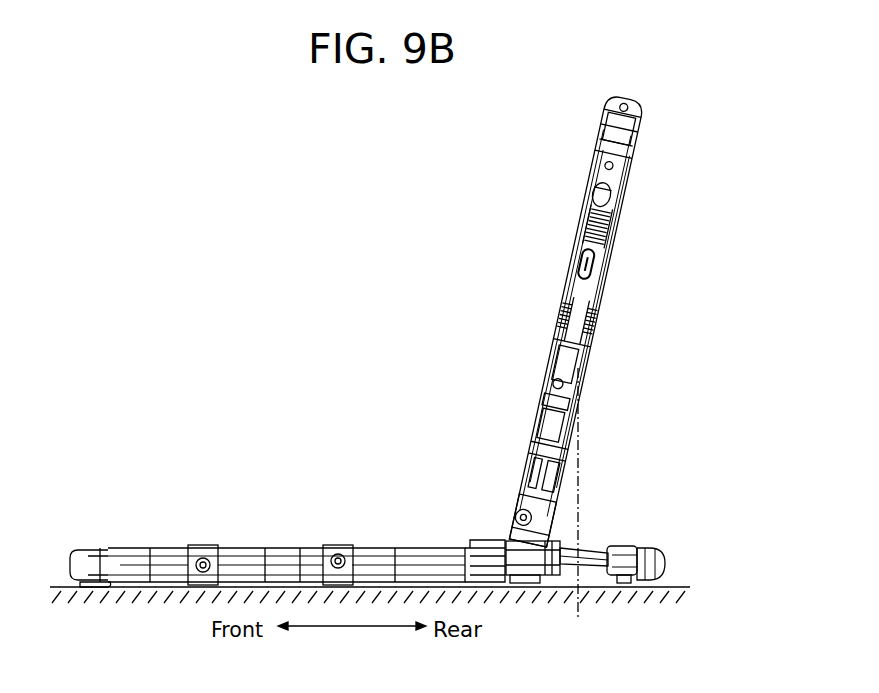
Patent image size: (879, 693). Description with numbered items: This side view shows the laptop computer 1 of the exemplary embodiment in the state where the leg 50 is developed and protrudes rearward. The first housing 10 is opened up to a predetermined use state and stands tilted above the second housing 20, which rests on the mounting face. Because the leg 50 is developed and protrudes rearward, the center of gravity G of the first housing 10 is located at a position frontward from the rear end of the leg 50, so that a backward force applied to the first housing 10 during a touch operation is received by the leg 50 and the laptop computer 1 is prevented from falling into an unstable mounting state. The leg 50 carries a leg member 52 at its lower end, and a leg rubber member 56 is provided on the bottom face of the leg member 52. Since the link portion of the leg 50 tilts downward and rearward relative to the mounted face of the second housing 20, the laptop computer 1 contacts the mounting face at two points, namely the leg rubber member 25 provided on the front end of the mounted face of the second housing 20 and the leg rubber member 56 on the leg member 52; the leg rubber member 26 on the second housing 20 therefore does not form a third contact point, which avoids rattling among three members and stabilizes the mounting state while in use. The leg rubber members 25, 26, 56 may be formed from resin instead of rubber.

The laptop computer 1 is at (372, 274).
The first housing 10 is at (581, 227).
The second housing 20 is at (305, 547).
The leg rubber member 25 is at (97, 587).
The leg rubber member 26 is at (520, 581).
The leg 50 is at (584, 549).
The leg member 52 is at (633, 550).
The leg rubber member 56 is at (623, 582).
The center of gravity G is at (573, 317).